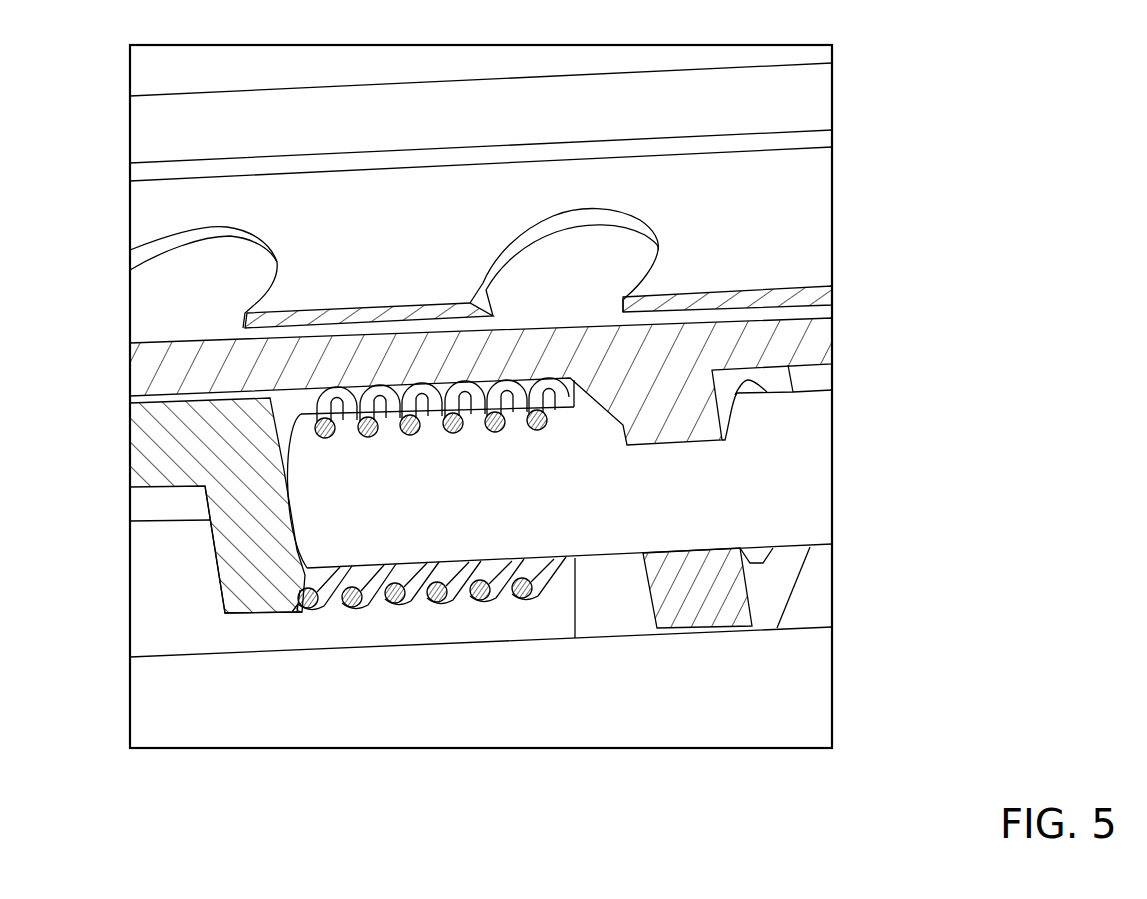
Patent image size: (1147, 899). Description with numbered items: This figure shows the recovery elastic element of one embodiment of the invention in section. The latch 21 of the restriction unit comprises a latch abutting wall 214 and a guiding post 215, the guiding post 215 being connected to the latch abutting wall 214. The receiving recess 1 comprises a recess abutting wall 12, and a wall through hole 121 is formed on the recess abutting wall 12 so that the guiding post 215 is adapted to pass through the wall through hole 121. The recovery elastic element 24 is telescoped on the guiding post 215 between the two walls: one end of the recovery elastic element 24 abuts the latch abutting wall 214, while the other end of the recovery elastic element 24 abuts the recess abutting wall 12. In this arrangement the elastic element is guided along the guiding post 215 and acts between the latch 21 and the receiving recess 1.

The receiving recess 1 is at (792, 338).
The recess abutting wall 12 is at (712, 592).
The wall through hole 121 is at (752, 564).
The latch 21 is at (173, 438).
The latch abutting wall 214 is at (255, 555).
The guiding post 215 is at (615, 495).
The recovery elastic element 24 is at (435, 607).